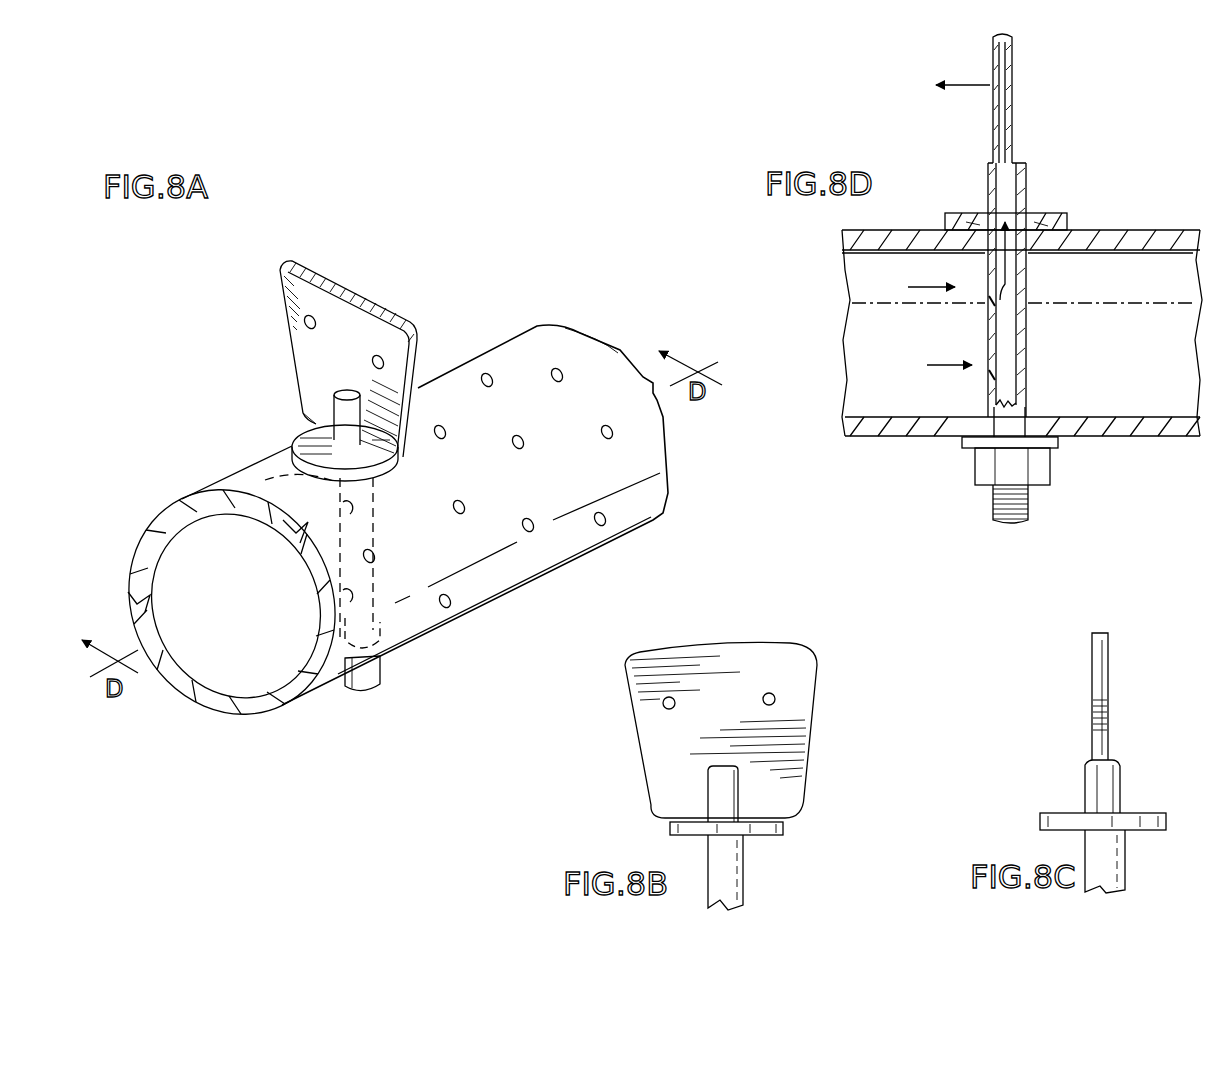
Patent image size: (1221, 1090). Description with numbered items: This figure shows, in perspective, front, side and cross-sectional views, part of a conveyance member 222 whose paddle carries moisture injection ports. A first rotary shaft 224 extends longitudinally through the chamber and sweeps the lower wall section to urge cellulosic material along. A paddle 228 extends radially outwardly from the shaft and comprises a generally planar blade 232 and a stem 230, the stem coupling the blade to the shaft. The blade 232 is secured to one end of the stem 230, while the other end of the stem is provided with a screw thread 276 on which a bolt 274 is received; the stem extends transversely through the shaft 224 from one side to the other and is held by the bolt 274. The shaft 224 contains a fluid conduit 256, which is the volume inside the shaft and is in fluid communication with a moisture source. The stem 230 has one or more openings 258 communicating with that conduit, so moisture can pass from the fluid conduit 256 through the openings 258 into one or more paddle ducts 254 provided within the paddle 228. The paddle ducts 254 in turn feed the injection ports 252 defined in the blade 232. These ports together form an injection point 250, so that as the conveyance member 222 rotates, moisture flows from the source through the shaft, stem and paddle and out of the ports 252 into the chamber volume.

In FIG. 8A, the conveyance member 222 is at (434, 648).
In FIG. 8A, the first rotary shaft 224 is at (150, 546).
In FIG. 8D, the first rotary shaft 224 is at (1135, 428).
In FIG. 8A, the paddle 228 is at (245, 407).
In FIG. 8A, the stem 230 is at (318, 478).
In FIG. 8D, the stem 230 is at (1029, 298).
In FIG. 8B, the stem 230 is at (746, 860).
In FIG. 8C, the stem 230 is at (1126, 857).
In FIG. 8A, the blade 232 is at (312, 360).
In FIG. 8D, the blade 232 is at (1027, 148).
In FIG. 8B, the blade 232 is at (820, 748).
In FIG. 8C, the blade 232 is at (1090, 690).
In FIG. 8A, the injection point 250 is at (291, 315).
In FIG. 8D, the injection point 250 is at (1006, 221).
In FIG. 8B, the injection point 250 is at (726, 800).
In FIG. 8C, the injection point 250 is at (1103, 795).
In FIG. 8A, the injection port 252 is at (380, 354).
In FIG. 8D, the injection port 252 is at (990, 88).
In FIG. 8B, the injection port 252 is at (768, 692).
In FIG. 8D, the paddle duct 254 is at (1014, 370).
In FIG. 8A, the fluid conduit 256 is at (236, 657).
In FIG. 8A, the opening 258 is at (374, 560).
In FIG. 8D, the opening 258 is at (990, 302).
In FIG. 8A, the bolt 274 is at (379, 686).
In FIG. 8D, the bolt 274 is at (1046, 470).
In FIG. 8D, the screw thread 276 is at (1013, 524).